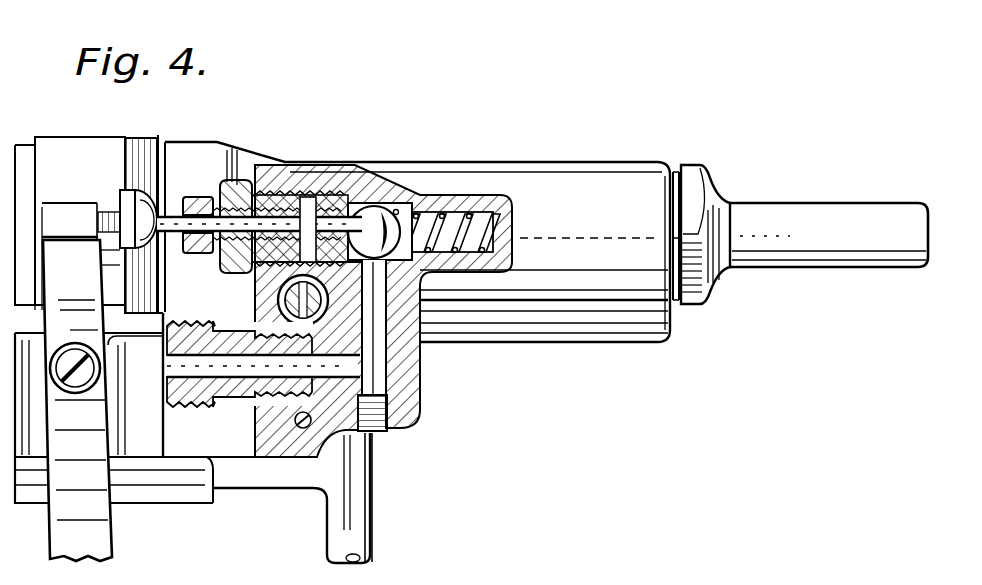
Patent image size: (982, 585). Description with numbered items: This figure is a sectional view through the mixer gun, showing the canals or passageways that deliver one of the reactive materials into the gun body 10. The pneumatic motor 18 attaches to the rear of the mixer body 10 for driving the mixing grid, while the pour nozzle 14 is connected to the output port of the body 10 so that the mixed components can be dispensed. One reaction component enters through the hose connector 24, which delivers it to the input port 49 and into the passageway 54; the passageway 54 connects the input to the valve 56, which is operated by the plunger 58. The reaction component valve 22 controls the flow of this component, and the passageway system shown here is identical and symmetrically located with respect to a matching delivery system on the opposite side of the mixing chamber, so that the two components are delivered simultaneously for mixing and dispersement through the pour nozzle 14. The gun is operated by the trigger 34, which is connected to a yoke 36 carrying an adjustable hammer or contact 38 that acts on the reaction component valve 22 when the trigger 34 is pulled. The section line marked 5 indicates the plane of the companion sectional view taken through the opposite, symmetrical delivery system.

The gun body 10 is at (537, 158).
The pour nozzle 14 is at (789, 212).
The pneumatic motor 18 is at (78, 155).
The reaction component valve 22 is at (232, 186).
The hose connector 24 is at (232, 400).
The trigger 34 is at (85, 515).
The yoke 36 is at (83, 303).
The adjustable hammer 38 is at (133, 210).
The input port 49 is at (352, 368).
The passageway 54 is at (377, 340).
The valve 56 is at (318, 196).
The plunger 58 is at (172, 222).
The section line 5- 5 is at (74, 225).